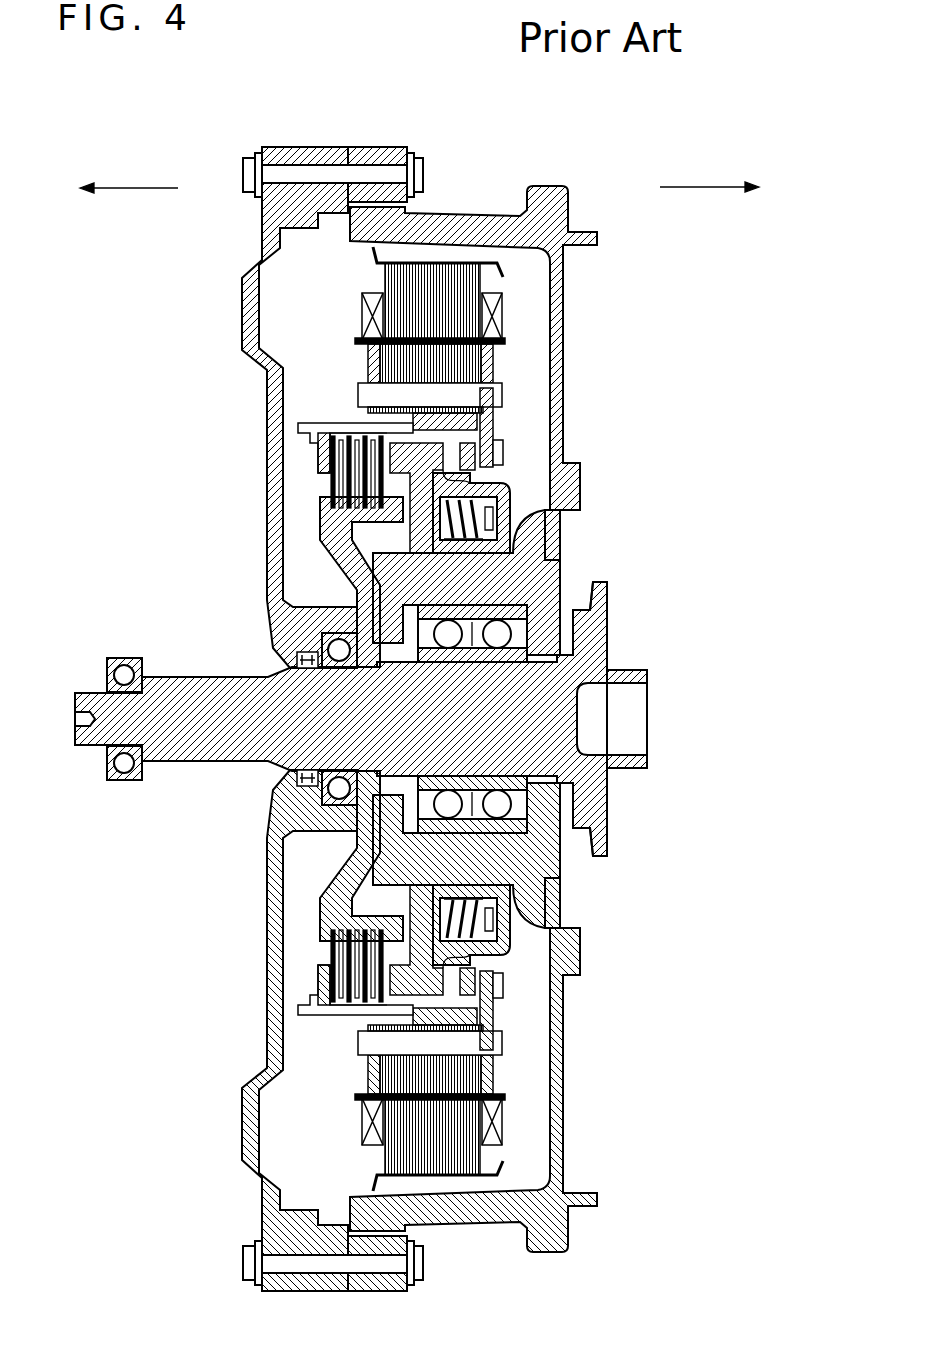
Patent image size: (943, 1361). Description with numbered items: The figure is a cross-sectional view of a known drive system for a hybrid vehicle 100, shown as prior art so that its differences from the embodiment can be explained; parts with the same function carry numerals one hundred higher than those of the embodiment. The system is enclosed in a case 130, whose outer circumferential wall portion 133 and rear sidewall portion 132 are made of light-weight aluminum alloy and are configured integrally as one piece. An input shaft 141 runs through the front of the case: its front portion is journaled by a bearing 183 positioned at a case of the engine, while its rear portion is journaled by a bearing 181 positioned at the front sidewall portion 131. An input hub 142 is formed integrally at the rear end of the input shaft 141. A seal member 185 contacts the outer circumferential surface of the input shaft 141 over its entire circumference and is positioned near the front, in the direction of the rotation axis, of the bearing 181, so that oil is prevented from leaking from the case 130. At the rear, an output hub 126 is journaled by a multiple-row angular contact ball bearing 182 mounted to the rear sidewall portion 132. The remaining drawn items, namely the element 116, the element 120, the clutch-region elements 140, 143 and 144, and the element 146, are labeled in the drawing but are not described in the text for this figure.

The known drive system for a hybrid vehicle 100 is at (396, 86).
The output shaft hub 116 is at (590, 637).
The housing 120 is at (298, 317).
The output hub 126 is at (512, 530).
The case 130 is at (286, 129).
The front sidewall portion 131 is at (268, 512).
The rear sidewall portion 132 is at (563, 386).
The outer circumferential wall portion 133 is at (468, 235).
The clutch 140 is at (288, 442).
The input shaft 141 is at (187, 705).
The input hub 142 is at (318, 560).
The clutch plates 143 is at (327, 490).
The clutch hub 144 is at (330, 425).
The return spring 146 is at (487, 920).
The bearing 181 is at (287, 642).
The multiple-row angular contact ball bearing 182 is at (478, 600).
The bearing 183 is at (125, 658).
The seal member 185 is at (300, 662).